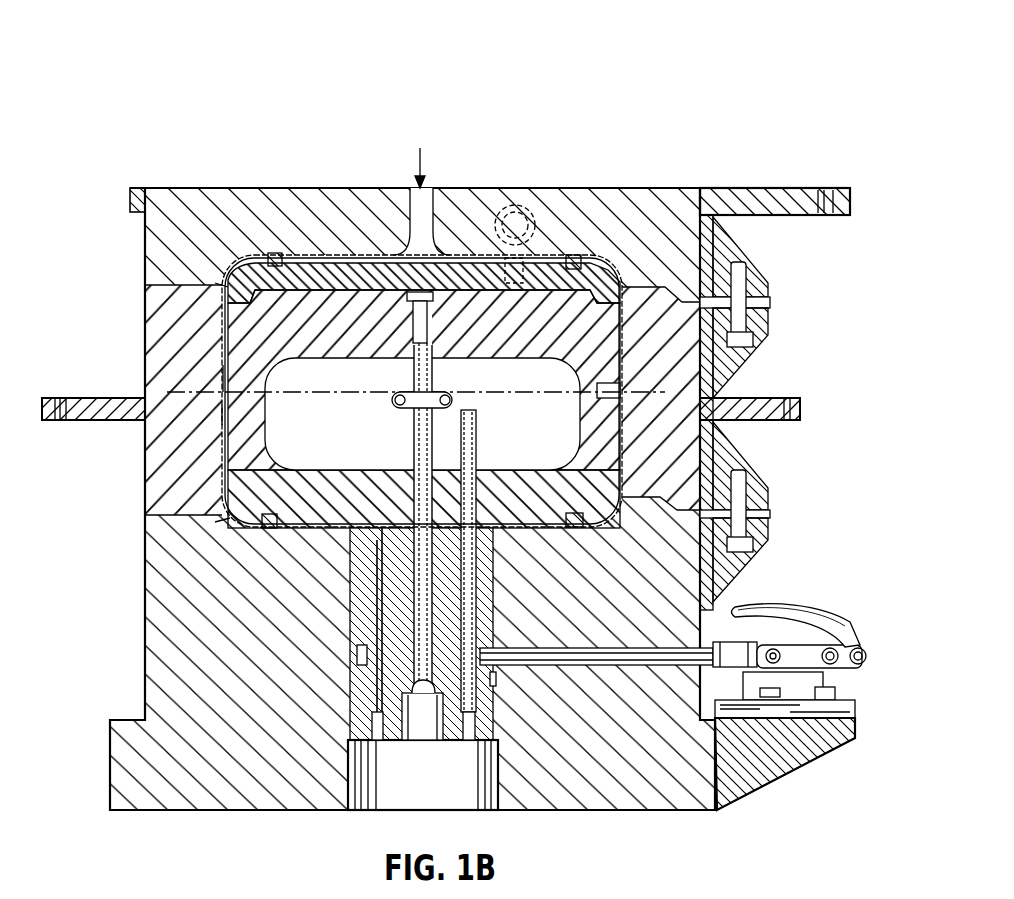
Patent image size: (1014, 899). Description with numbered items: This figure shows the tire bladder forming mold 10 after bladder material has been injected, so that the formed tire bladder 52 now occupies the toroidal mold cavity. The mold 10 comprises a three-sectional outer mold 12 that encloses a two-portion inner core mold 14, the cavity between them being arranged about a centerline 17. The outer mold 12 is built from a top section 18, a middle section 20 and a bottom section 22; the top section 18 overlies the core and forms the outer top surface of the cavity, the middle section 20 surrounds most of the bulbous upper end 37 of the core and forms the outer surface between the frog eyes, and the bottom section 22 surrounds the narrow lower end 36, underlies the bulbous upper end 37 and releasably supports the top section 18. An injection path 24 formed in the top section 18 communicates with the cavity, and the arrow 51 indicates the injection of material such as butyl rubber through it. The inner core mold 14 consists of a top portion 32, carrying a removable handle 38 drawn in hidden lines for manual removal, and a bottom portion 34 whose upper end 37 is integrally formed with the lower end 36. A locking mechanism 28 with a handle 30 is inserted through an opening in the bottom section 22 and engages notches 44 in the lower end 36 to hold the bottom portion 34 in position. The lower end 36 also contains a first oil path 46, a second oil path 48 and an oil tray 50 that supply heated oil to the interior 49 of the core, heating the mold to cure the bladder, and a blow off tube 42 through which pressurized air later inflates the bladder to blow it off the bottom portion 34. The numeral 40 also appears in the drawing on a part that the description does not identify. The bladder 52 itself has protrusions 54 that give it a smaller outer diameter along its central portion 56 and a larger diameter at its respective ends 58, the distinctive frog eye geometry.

The mold 10 is at (689, 71).
The outer mold 12 is at (681, 178).
The inner core mold 14 is at (559, 248).
The centerline 17 is at (498, 395).
The top section 18 is at (150, 242).
The middle section 20 is at (150, 490).
The bottom section 22 is at (152, 628).
The injection path 24 is at (405, 250).
The locking mechanism 28 is at (608, 657).
The handle 30 is at (793, 607).
The top portion 32 is at (322, 262).
The bottom portion 34 is at (225, 318).
The lower end 36 is at (600, 450).
The upper end 37 is at (605, 353).
The removable handle 38 is at (515, 205).
The valve stem 40 is at (413, 322).
The blow off tube 42 is at (410, 583).
The notches 44 is at (495, 648).
The first oil path 46 is at (378, 790).
The second oil path 48 is at (466, 752).
The interior 49 is at (442, 414).
The oil tray 50 is at (382, 470).
The arrow 51 is at (422, 150).
The tire bladder 52 is at (212, 416).
The protrusions 54 is at (223, 262).
The central portion 56 is at (226, 382).
The ends 58 is at (220, 272).